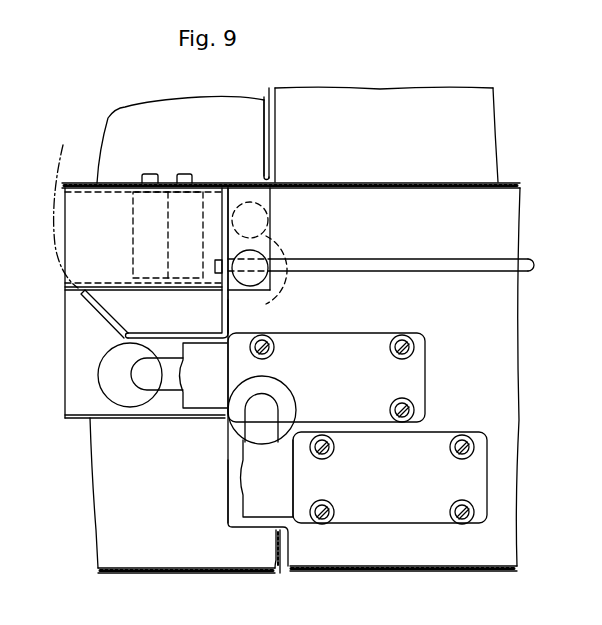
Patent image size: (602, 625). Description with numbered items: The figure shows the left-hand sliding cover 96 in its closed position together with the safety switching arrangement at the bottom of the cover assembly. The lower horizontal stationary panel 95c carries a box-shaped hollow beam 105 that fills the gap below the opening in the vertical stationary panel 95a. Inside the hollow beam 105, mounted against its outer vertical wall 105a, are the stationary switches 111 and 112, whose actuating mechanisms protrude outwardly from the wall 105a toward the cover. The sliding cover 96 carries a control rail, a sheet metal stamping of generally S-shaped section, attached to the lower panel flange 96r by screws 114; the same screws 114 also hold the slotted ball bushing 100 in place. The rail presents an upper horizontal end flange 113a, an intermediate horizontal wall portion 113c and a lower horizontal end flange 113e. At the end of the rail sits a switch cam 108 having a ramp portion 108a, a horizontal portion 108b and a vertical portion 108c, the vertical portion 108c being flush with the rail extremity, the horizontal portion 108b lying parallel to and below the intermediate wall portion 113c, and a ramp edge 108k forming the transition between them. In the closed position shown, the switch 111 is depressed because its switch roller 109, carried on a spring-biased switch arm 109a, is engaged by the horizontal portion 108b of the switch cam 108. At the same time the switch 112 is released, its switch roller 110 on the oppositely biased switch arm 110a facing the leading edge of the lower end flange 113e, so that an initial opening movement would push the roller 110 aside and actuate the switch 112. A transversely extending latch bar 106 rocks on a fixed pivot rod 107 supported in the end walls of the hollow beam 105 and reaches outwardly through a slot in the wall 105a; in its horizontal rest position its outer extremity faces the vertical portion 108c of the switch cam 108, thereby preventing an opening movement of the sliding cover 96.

The vertical stationary panel 95a is at (413, 115).
The lower horizontal stationary panel 95c is at (195, 573).
The sliding cover 96 is at (254, 147).
The lower panel flange 96r is at (219, 181).
The slotted ball bushing 100 is at (177, 213).
The hollow beam 105 is at (502, 203).
The outer vertical wall 105a is at (228, 486).
The latch bar 106 is at (281, 252).
The pivot rod 107 is at (498, 264).
The switch cam 108 is at (171, 335).
The ramp portion 108a is at (142, 312).
The horizontal portion 108b is at (209, 375).
The vertical portion 108c is at (229, 318).
The ramp edge 108k is at (63, 145).
The switch roller 109 is at (124, 402).
The switch arm 109a is at (159, 385).
The switch roller 110 is at (281, 397).
The switch arm 110a is at (268, 421).
The stationary switch 111 is at (410, 377).
The stationary switch 112 is at (476, 484).
The upper horizontal end flange 113a is at (110, 190).
The intermediate horizontal wall portion 113c is at (93, 286).
The lower horizontal end flange 113e is at (145, 303).
The screws 114 is at (156, 174).